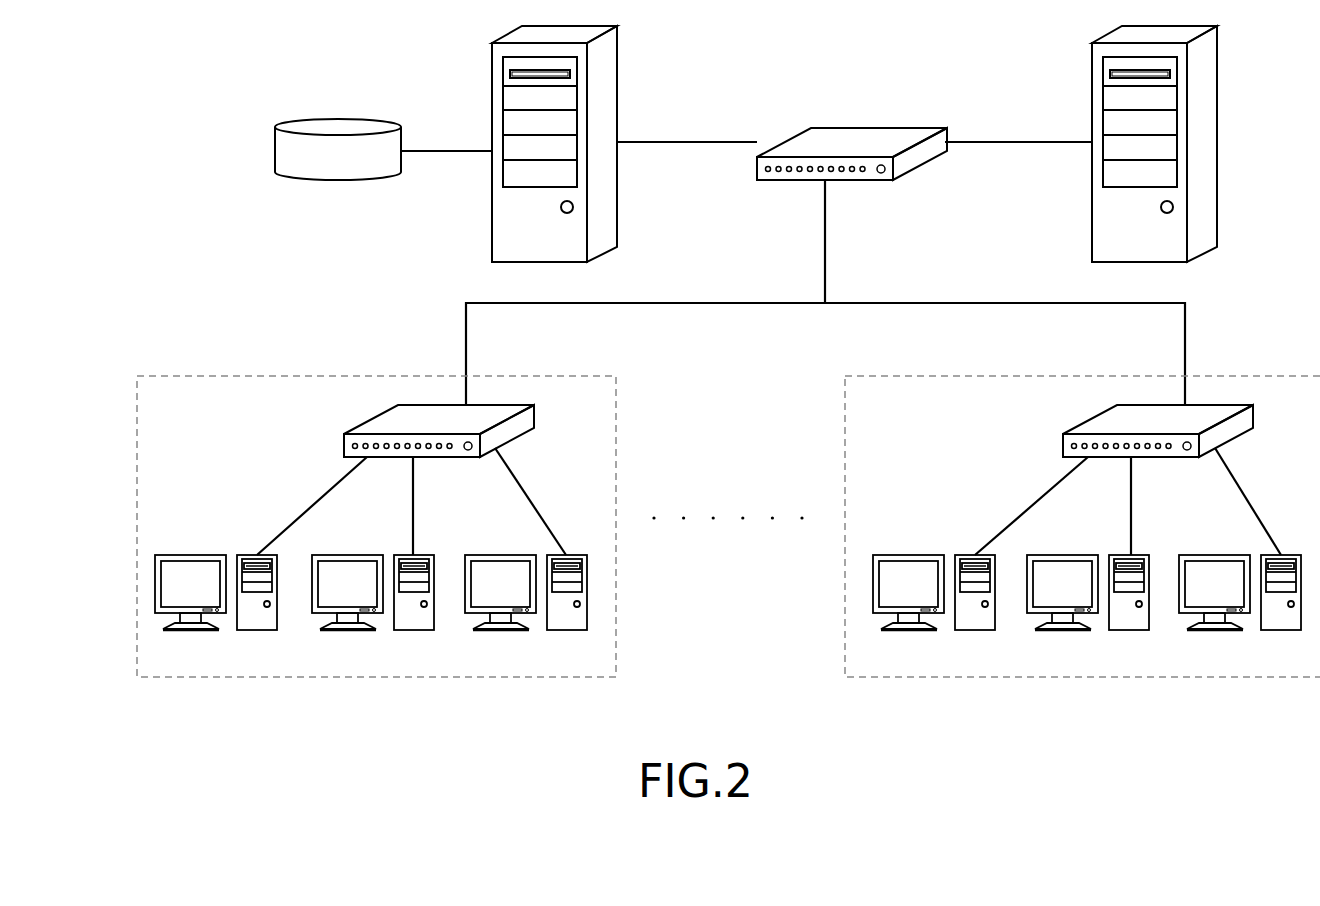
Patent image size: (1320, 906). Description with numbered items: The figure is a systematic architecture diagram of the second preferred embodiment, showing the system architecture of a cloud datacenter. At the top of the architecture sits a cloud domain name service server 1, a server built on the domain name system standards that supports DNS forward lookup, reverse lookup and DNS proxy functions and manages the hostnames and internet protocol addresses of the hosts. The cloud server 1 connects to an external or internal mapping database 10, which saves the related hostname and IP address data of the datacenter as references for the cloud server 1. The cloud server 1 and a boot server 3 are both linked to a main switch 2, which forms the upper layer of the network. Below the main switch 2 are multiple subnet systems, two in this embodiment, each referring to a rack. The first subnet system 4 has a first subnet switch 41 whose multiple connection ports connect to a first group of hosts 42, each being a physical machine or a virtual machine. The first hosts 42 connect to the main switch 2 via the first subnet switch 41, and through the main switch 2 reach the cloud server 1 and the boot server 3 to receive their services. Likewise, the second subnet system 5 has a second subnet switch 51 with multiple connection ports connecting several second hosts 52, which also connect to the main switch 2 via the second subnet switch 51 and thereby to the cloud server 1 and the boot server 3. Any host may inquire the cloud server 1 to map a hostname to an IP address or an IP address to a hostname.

The cloud domain name service server 1 is at (605, 63).
The main switch 2 is at (850, 142).
The boot server 3 is at (1205, 80).
The mapping database 10 is at (287, 153).
The first subnet system 4 is at (212, 398).
The first subnet switch 41 is at (422, 418).
The first group of hosts 42 is at (600, 617).
The second subnet system 5 is at (920, 407).
The second subnet switch 51 is at (1208, 412).
The second hosts 52 is at (860, 609).